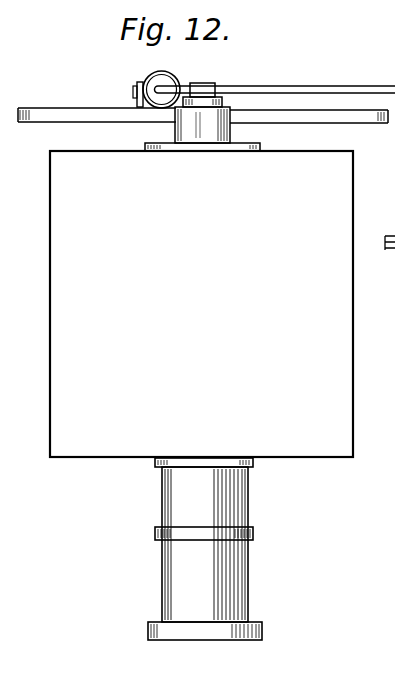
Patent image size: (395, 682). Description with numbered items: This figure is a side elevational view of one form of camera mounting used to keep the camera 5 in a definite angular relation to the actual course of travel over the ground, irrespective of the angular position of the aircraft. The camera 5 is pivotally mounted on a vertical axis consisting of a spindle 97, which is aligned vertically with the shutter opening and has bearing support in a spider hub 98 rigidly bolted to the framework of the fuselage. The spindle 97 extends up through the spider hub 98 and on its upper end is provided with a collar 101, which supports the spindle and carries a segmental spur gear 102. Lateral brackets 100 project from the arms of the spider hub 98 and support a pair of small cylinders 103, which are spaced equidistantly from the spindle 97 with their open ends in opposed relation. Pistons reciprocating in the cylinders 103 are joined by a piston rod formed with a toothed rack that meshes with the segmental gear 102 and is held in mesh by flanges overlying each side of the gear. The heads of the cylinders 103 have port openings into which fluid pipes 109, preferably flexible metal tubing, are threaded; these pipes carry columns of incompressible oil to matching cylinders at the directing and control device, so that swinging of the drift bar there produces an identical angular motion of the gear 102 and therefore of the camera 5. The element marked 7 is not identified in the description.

The camera 5 is at (355, 418).
The shaft 7 is at (391, 307).
The spindle 97 is at (232, 132).
The spider hub 98 is at (118, 113).
The lateral brackets 100 is at (133, 94).
The collar 101 is at (238, 100).
The segmental spur gear 102 is at (188, 84).
The small cylinders 103 is at (159, 79).
The fluid pipes 109 is at (388, 243).